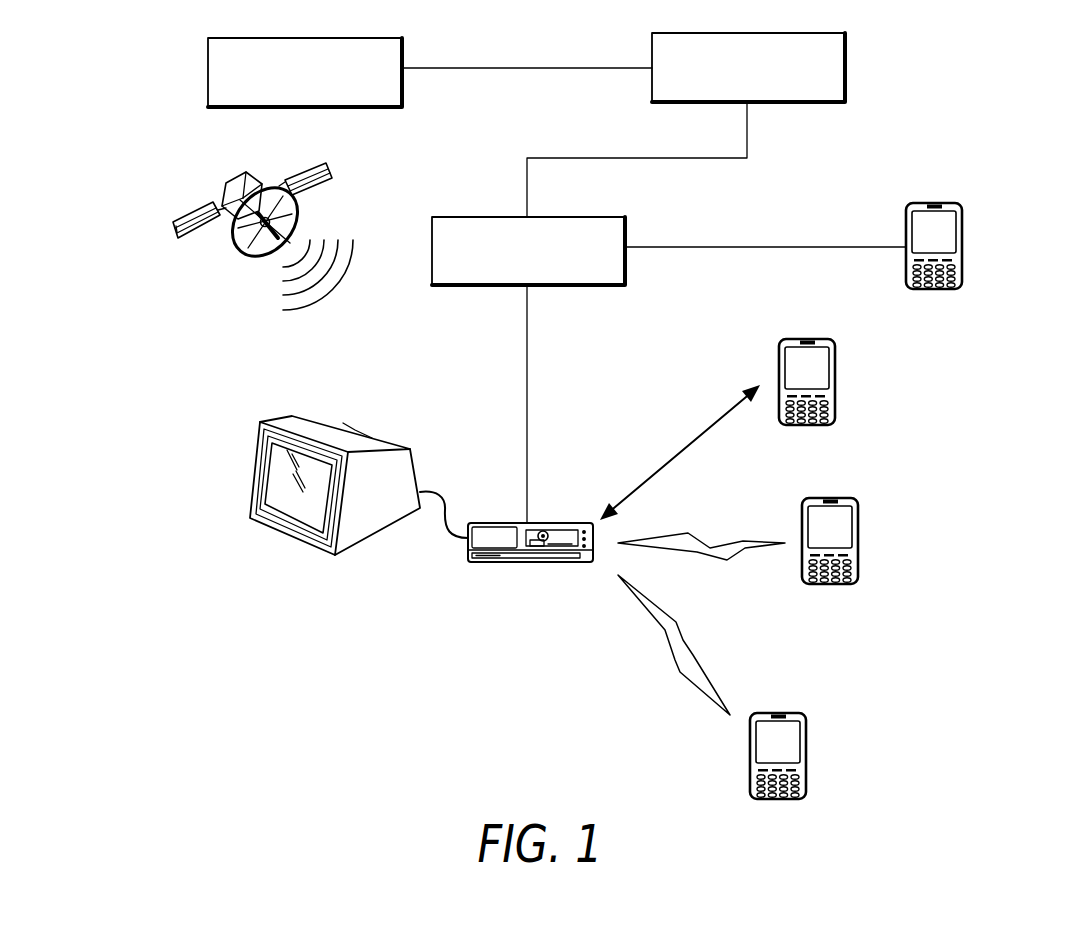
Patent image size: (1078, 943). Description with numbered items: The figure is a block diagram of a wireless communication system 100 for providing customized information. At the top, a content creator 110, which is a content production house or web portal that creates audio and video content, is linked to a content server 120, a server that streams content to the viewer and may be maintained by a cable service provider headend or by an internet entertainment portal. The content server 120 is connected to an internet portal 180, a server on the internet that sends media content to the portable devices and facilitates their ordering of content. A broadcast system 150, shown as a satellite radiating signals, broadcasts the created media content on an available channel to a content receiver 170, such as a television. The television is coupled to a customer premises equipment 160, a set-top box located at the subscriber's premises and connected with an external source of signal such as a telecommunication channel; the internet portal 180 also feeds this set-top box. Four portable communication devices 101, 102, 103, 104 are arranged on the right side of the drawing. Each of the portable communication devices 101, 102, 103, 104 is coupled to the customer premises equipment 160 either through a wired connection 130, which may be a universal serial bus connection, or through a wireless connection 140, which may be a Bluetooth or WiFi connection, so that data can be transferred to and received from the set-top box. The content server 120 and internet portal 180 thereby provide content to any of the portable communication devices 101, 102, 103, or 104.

The wireless communication system 100 is at (1070, 52).
The content creator 110 is at (385, 38).
The content server 120 is at (823, 33).
The internet portal 180 is at (605, 217).
The broadcast system 150 is at (198, 181).
The content receiver 170 is at (270, 419).
The customer premises equipment (CPE) 160 is at (527, 564).
The wired connection 130 is at (683, 448).
The wireless connection 140 is at (741, 536).
The portable communication device 101 is at (945, 203).
The portable communication device 102 is at (819, 339).
The portable communication device 103 is at (842, 498).
The portable communication device 104 is at (783, 713).